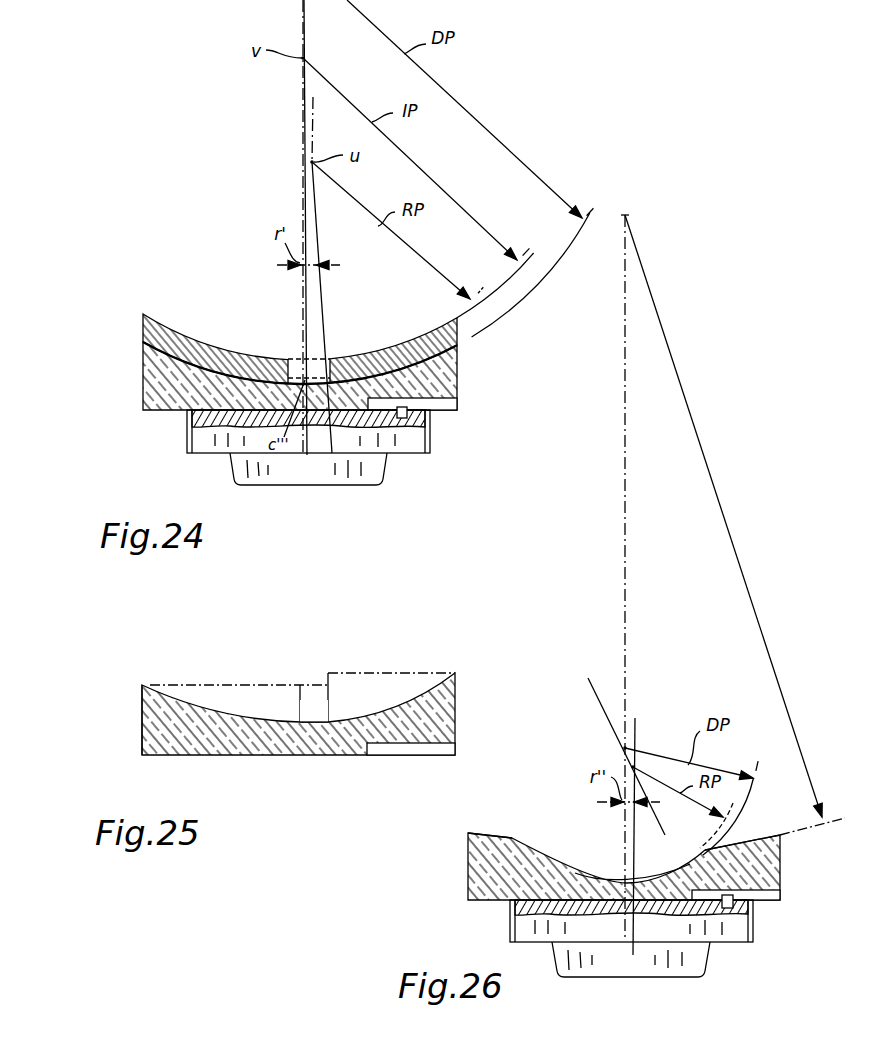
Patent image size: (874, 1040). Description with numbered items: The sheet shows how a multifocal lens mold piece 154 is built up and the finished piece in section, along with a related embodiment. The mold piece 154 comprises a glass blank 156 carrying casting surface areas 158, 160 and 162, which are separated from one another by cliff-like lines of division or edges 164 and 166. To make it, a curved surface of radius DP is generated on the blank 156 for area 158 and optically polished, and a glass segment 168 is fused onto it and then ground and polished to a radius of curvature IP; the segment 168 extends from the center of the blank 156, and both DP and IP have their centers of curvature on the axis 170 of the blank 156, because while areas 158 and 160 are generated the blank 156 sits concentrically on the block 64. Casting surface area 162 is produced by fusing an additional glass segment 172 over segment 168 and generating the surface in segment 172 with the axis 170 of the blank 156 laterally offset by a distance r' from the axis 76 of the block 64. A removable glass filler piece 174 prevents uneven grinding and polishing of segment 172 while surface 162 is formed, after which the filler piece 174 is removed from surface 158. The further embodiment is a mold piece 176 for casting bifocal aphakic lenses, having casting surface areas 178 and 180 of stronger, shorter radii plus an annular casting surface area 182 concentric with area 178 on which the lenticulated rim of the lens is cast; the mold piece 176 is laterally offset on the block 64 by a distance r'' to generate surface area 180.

In FIG. 24, the block 64 is at (435, 443).
In FIG. 26, the block 64 is at (768, 931).
In FIG. 24, the axis of block 76 is at (307, 448).
In FIG. 26, the axis of block 76 is at (634, 953).
In FIG. 25, the mold piece 154 is at (128, 708).
In FIG. 24, the glass blank 156 is at (458, 396).
In FIG. 25, the glass blank 156 is at (287, 757).
In FIG. 24, the casting surface area 158 is at (297, 378).
In FIG. 25, the casting surface area 158 is at (208, 695).
In FIG. 25, the casting surface area 160 is at (312, 697).
In FIG. 25, the casting surface area 162 is at (415, 687).
In FIG. 25, the line of division 164 is at (298, 700).
In FIG. 25, the line of division 166 is at (325, 698).
In FIG. 24, the glass segment 168 is at (462, 343).
In FIG. 24, the axis of blank 170 is at (302, 200).
In FIG. 24, the glass segment 172 is at (425, 337).
In FIG. 24, the removable glass filler piece 174 is at (222, 350).
In FIG. 26, the mold piece 176 is at (456, 868).
In FIG. 26, the casting surface area 178 is at (618, 878).
In FIG. 26, the casting surface area 180 is at (637, 878).
In FIG. 26, the annular casting surface area 182 is at (508, 835).